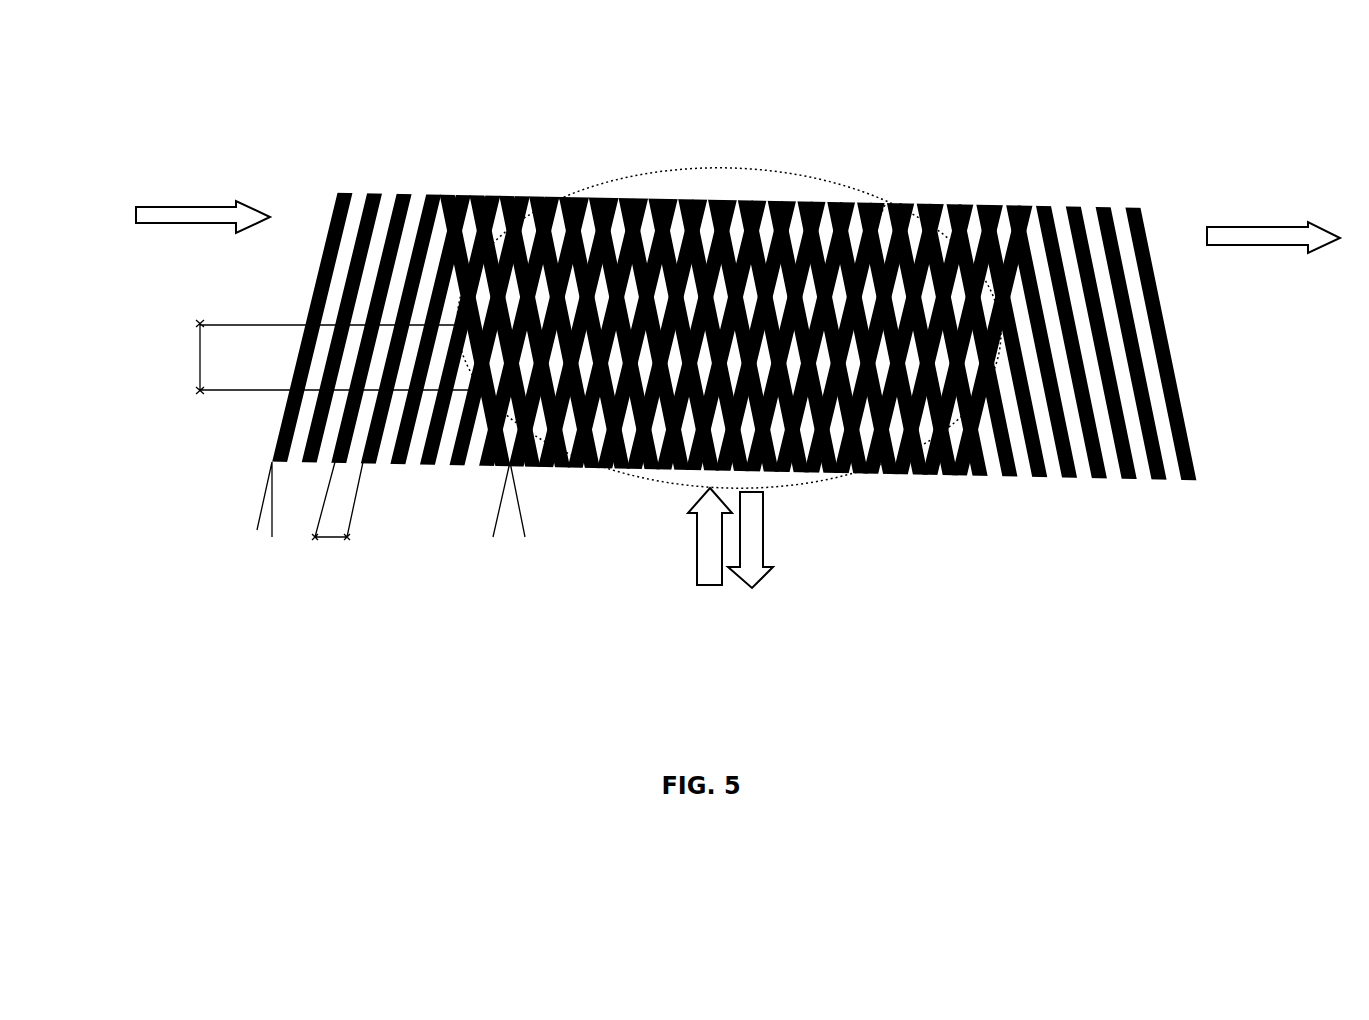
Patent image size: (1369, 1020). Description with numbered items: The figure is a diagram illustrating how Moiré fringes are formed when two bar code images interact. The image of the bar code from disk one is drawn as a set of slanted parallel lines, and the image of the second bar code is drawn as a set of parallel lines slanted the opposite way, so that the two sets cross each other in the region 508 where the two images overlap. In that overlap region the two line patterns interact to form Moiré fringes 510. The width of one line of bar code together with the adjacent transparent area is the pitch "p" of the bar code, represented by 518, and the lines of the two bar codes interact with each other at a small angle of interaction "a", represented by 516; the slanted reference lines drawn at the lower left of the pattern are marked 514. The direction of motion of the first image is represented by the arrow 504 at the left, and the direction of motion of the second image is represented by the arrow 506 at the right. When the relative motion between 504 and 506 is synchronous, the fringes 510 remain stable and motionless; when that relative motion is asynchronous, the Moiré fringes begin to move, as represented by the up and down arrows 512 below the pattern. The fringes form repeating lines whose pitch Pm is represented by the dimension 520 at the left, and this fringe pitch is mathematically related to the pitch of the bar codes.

The arrow 504 is at (187, 208).
The arrow 506 is at (1267, 227).
The region 508 is at (728, 190).
The Moiré fringes 510 is at (885, 205).
The arrows 512 is at (733, 585).
The first strip angle 514 is at (270, 528).
The angle of interaction 516 is at (510, 532).
The pitch 518 is at (312, 540).
The pitch of the Moiré fringes 520 is at (200, 355).